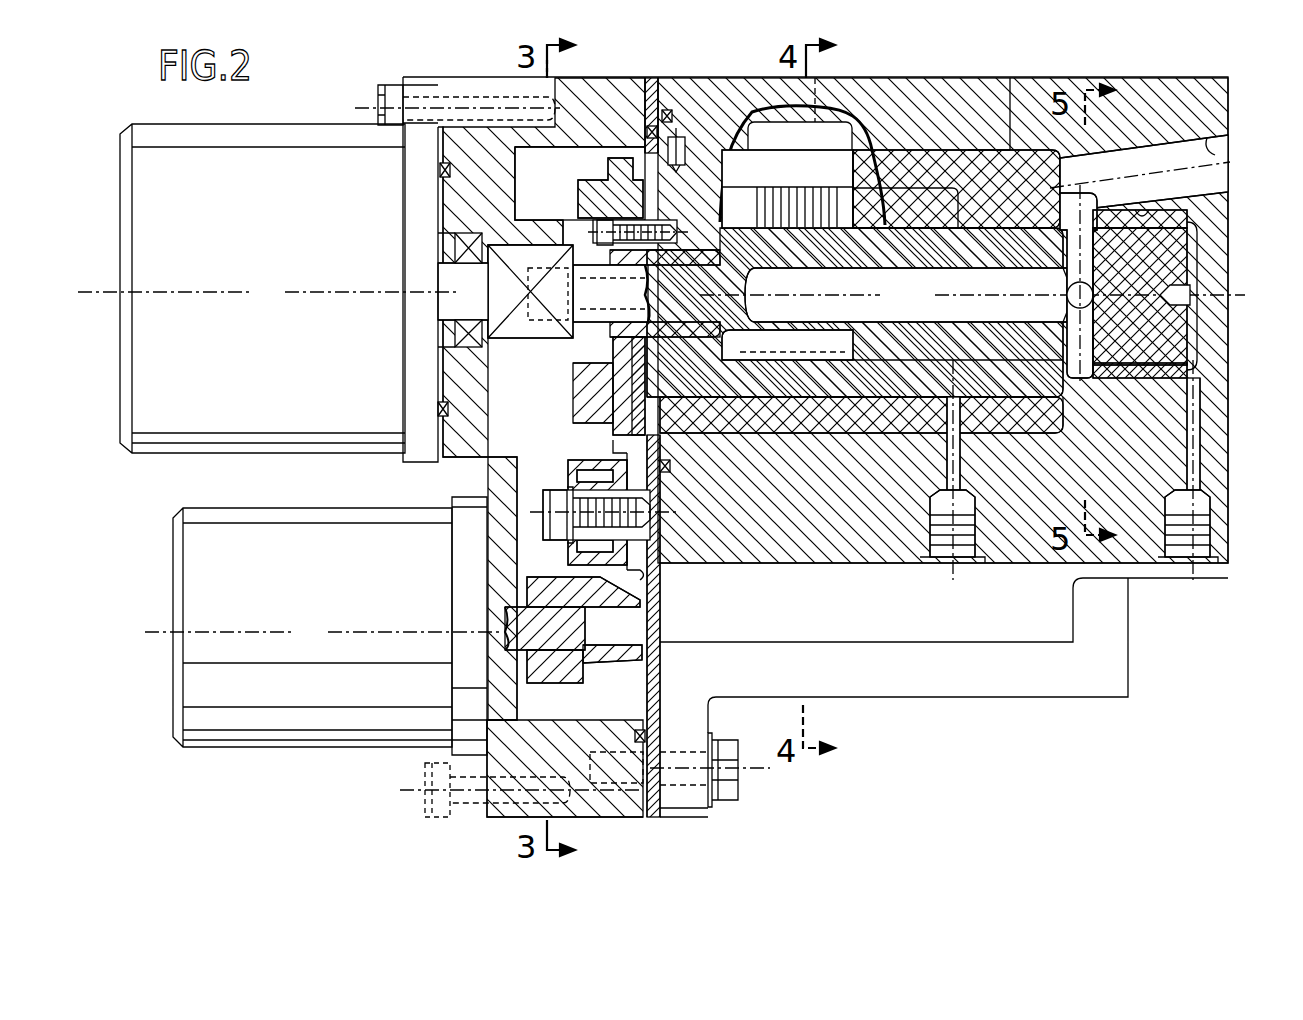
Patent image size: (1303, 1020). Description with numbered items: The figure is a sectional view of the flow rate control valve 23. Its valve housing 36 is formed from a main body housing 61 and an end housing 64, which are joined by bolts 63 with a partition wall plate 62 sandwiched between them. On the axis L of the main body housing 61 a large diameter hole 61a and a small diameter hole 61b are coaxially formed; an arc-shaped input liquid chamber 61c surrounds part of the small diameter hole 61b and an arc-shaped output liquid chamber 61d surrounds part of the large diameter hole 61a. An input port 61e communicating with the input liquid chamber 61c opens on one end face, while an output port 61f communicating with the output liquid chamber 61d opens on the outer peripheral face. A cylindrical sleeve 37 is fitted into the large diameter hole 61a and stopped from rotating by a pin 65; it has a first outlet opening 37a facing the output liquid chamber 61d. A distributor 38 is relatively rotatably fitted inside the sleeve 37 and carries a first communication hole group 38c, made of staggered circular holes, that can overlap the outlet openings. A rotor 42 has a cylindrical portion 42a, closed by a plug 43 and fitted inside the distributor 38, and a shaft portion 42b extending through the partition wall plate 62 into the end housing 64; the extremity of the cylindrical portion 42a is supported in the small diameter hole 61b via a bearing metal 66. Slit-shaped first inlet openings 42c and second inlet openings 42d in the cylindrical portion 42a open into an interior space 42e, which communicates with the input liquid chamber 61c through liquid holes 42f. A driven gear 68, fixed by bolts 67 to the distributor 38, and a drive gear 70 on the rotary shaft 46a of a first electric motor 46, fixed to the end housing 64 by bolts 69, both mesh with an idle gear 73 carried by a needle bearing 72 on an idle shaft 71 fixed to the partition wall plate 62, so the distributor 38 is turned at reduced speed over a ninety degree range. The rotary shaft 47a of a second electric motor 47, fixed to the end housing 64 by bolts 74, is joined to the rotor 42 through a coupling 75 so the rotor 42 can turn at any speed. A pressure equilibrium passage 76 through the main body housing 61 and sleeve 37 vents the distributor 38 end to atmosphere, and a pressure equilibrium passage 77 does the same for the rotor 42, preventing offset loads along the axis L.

The flow rate control valve 23 is at (1000, 708).
The valve housing 36 is at (1178, 70).
The cylindrical sleeve 37 is at (1017, 148).
The first outlet opening 37a is at (772, 188).
The distributor 38 is at (928, 183).
The first communication hole group 38c is at (868, 246).
The rotor 42 is at (897, 365).
The cylindrical portion 42a is at (997, 345).
The shaft portion 42b is at (600, 326).
The first inlet opening 42c is at (793, 200).
The second inlet opening 42d is at (786, 276).
The interior space 42e is at (928, 306).
The liquid hole 42f is at (1062, 313).
The plug 43 is at (1163, 282).
The first electric motor 46 is at (324, 643).
The rotary shaft 46a is at (553, 600).
The second electric motor 47 is at (282, 303).
The rotary shaft 47a is at (470, 285).
The main body housing 61 is at (757, 76).
The large diameter hole 61a is at (972, 150).
The small diameter hole 61b is at (1143, 218).
The input liquid chamber 61c is at (1078, 212).
The output liquid chamber 61d is at (845, 150).
The input port 61e is at (1225, 156).
The output port 61f is at (822, 92).
The partition wall plate 62 is at (650, 86).
The bolt 63 is at (735, 800).
The end housing 64 is at (583, 76).
The pin 65 is at (684, 140).
The bearing metal 66 is at (1137, 378).
The bolt 67 is at (598, 232).
The driven gear 68 is at (612, 182).
The bolt 69 is at (425, 793).
The drive gear 70 is at (628, 668).
The idle shaft 71 is at (585, 495).
The needle bearing 72 is at (597, 475).
The idle gear 73 is at (642, 615).
The bolt 74 is at (383, 105).
The coupling 75 is at (537, 336).
The pressure equilibrium passage 76 is at (947, 470).
The pressure equilibrium passage 77 is at (1200, 437).
The axis L is at (960, 300).